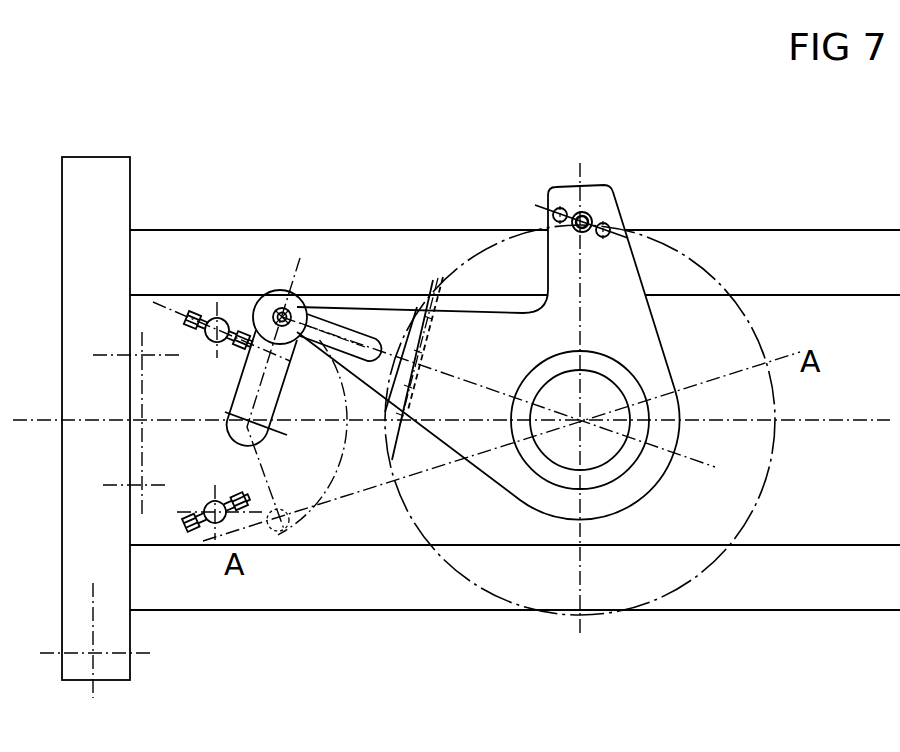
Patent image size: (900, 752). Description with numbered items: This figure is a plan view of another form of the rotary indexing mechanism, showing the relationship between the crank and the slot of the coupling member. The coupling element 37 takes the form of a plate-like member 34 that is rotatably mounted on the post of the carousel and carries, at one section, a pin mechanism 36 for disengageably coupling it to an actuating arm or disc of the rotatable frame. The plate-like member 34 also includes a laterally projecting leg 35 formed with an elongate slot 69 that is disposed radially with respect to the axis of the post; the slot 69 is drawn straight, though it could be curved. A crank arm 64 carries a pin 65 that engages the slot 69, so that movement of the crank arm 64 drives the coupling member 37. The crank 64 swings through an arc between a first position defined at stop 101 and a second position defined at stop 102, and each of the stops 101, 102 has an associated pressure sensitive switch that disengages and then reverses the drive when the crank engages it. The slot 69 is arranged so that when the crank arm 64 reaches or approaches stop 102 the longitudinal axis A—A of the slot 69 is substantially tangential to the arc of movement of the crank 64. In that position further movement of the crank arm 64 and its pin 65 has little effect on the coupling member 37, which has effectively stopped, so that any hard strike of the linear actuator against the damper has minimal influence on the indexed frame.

The plate-like member 34 is at (620, 328).
The laterally projecting leg 35 is at (381, 318).
The pin mechanism 36 is at (594, 214).
The coupling element 37 is at (652, 278).
The crank arm 64 is at (250, 382).
The pin 65 is at (294, 311).
The elongate slot 69 is at (350, 352).
The stop 101 is at (220, 315).
The stop 102 is at (223, 527).